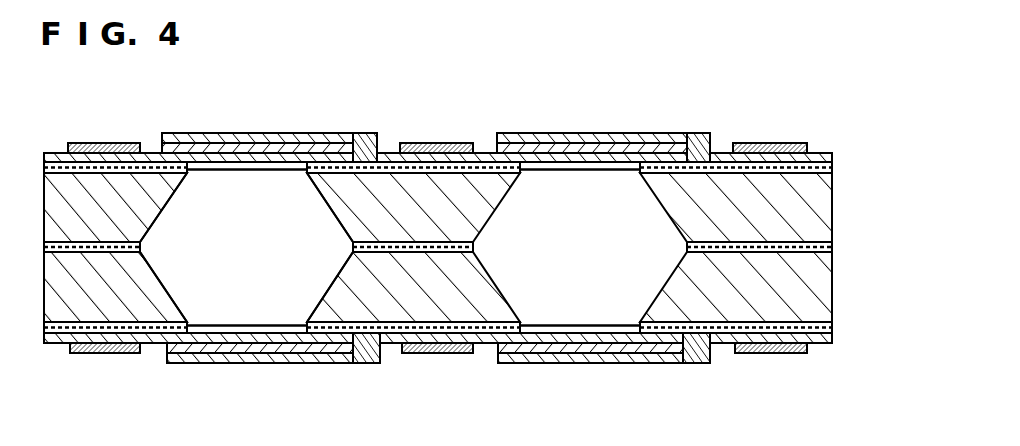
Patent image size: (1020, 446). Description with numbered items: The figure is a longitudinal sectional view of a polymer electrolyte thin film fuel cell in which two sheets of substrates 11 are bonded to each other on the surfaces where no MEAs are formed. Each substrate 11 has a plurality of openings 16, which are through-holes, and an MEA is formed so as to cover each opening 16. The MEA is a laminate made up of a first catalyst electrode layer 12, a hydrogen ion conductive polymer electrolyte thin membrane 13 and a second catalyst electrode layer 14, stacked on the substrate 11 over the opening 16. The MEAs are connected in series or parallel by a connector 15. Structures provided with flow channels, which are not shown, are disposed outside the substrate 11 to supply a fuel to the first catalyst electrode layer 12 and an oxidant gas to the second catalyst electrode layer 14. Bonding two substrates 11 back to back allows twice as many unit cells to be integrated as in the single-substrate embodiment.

The substrate 11 is at (443, 190).
The first catalyst electrode layer 12 is at (556, 155).
The hydrogen ion conductive polymer electrolyte thin membrane 13 is at (619, 142).
The second catalyst electrode layer 14 is at (696, 150).
The connector 15 is at (428, 142).
The opening 16 is at (227, 210).